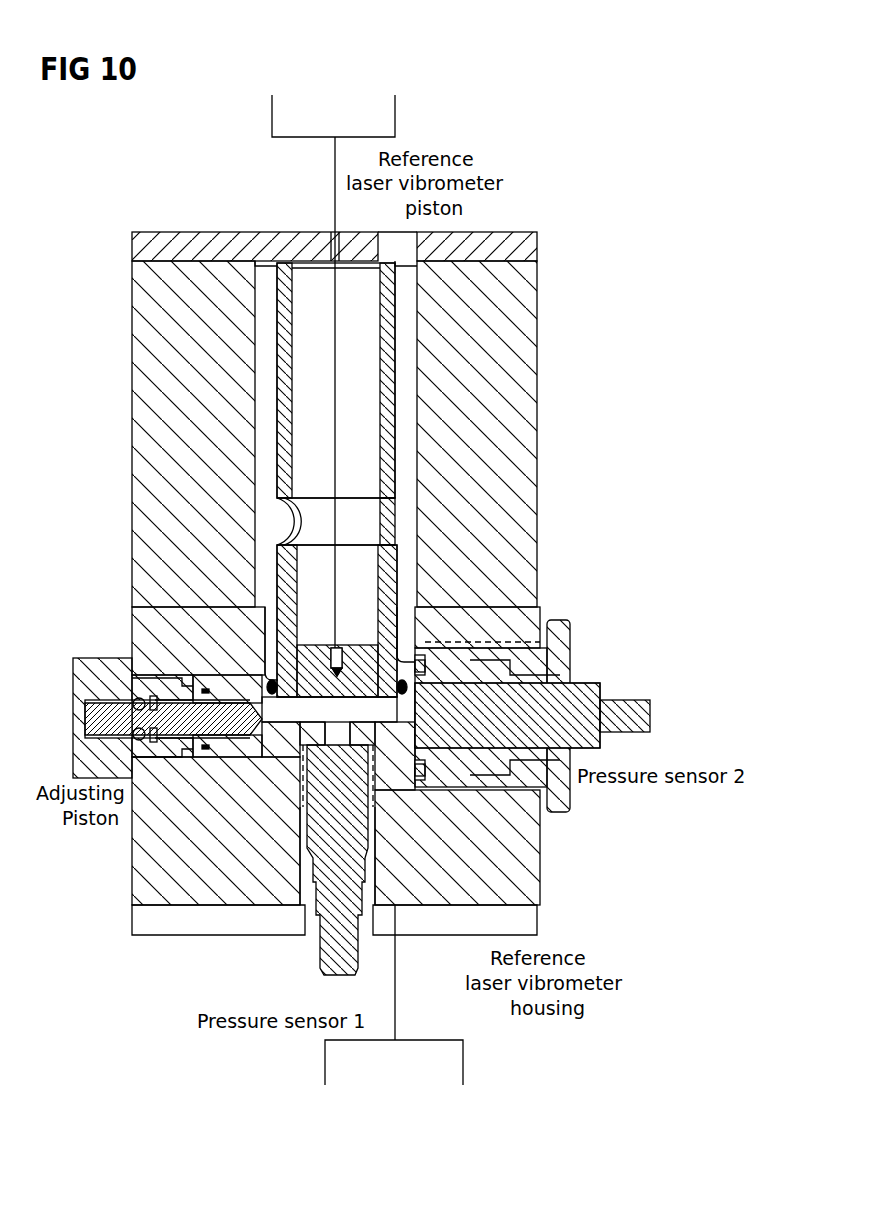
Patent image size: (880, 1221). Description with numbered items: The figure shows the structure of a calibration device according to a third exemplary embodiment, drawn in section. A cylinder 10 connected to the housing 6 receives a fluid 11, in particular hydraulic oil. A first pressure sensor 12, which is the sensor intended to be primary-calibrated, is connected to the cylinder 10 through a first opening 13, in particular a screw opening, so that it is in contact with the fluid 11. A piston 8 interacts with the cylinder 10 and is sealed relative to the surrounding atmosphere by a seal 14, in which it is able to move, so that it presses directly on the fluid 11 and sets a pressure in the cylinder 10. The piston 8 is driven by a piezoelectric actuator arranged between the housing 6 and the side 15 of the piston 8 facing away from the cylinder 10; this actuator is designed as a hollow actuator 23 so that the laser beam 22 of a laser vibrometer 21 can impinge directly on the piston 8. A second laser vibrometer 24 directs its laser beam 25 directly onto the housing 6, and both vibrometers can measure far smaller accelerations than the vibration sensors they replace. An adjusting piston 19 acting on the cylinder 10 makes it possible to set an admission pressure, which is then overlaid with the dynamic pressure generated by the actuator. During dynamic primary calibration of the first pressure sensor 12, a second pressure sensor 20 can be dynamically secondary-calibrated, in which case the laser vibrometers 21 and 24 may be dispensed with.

The housing 6 is at (522, 327).
The piston 8 is at (386, 521).
The cylinder 10 is at (268, 700).
The fluid 11 is at (300, 712).
The first pressure sensor 12 is at (340, 905).
The first opening 13 is at (372, 888).
The seal 14 is at (262, 688).
The side of the piston facing away from the cylinder 15 is at (392, 489).
The adjusting piston 19 is at (103, 713).
The second pressure sensor 20 is at (578, 695).
The laser vibrometer 21 is at (367, 121).
The laser beam 22 is at (332, 178).
The hollow actuator 23 is at (387, 367).
The second laser vibrometer 24 is at (438, 1064).
The laser beam 25 is at (396, 1027).